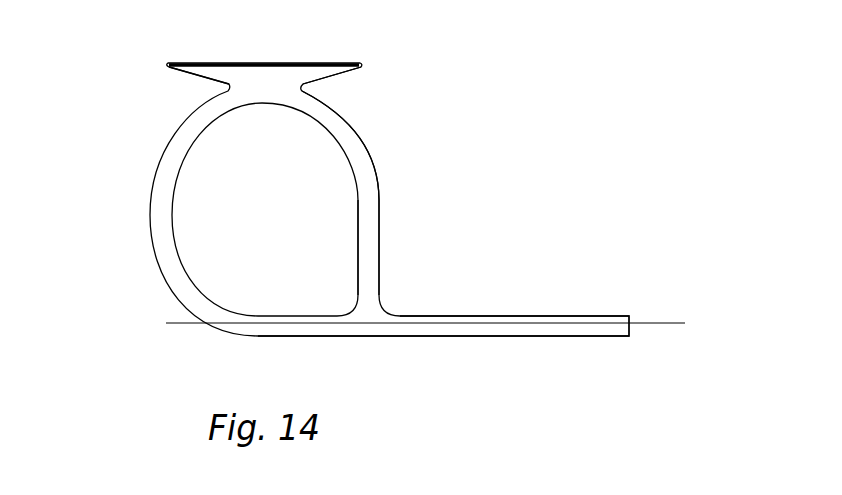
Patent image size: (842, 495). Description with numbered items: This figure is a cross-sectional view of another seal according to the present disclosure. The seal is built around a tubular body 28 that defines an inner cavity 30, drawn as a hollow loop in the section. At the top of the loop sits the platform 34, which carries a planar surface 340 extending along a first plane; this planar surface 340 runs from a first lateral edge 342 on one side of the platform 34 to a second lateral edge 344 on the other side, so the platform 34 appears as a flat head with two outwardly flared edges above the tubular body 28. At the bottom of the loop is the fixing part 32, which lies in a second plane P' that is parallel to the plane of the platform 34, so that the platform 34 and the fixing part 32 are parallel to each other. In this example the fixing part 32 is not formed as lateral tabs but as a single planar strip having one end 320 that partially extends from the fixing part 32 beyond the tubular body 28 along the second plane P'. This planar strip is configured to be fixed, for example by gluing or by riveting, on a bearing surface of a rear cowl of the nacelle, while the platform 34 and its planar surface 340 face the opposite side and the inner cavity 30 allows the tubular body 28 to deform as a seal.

The tubular body 28 is at (368, 252).
The inner cavity 30 is at (347, 205).
The fixing part 32 is at (277, 337).
The platform 34 is at (343, 94).
The end 320 is at (540, 337).
The planar surface 340 is at (280, 62).
The first lateral edge 342 is at (168, 65).
The second lateral edge 344 is at (363, 64).
The second plane P' is at (442, 303).